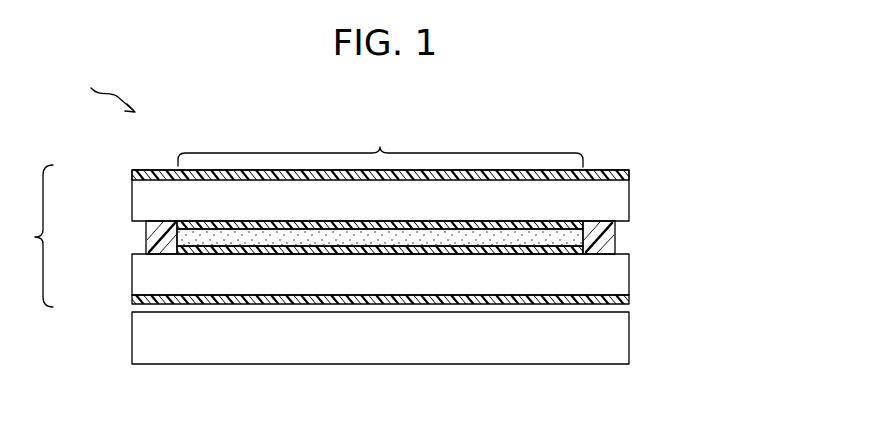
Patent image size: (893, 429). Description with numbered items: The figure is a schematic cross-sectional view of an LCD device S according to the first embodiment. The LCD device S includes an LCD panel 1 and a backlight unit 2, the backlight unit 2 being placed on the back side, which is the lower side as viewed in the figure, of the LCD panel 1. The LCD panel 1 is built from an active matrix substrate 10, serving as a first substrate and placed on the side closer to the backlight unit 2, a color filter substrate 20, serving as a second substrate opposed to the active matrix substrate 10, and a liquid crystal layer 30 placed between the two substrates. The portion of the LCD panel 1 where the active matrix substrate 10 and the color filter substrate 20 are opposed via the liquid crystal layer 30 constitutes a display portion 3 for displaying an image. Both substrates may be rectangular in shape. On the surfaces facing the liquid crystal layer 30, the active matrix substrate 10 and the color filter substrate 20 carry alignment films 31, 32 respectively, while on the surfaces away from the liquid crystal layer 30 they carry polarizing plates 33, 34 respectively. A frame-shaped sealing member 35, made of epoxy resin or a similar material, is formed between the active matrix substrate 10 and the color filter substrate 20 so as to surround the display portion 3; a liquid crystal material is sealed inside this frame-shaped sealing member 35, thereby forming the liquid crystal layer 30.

The LCD device S is at (106, 84).
The LCD panel 1 is at (31, 236).
The backlight unit 2 is at (140, 338).
The display portion 3 is at (380, 140).
The active matrix substrate 10 is at (140, 278).
The color filter substrate 20 is at (132, 203).
The liquid crystal layer 30 is at (193, 237).
The alignment film 31 is at (567, 250).
The alignment film 32 is at (567, 223).
The polarizing plate 33 is at (628, 300).
The polarizing plate 34 is at (610, 171).
The sealing member 35 is at (146, 237).